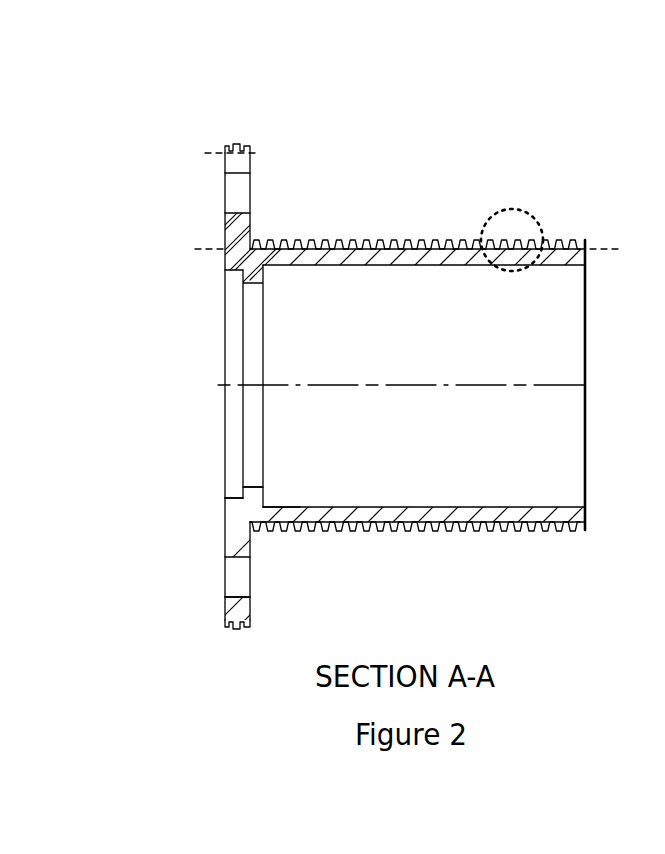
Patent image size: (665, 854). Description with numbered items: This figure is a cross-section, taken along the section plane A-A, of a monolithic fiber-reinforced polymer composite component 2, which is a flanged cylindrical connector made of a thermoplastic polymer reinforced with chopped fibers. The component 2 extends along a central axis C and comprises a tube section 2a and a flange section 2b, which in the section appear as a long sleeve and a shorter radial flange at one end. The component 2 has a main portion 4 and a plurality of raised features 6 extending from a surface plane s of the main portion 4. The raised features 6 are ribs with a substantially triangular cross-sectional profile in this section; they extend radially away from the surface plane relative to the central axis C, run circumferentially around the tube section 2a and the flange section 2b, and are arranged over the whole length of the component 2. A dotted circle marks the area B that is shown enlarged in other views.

The monolithic fiber-reinforced polymer composite component 2 is at (332, 331).
The tube section 2a is at (450, 217).
The flange section 2b is at (273, 192).
The main portion 4 is at (235, 600).
The raised features 6 is at (248, 624).
The area B is at (535, 222).
The central axis C is at (421, 385).